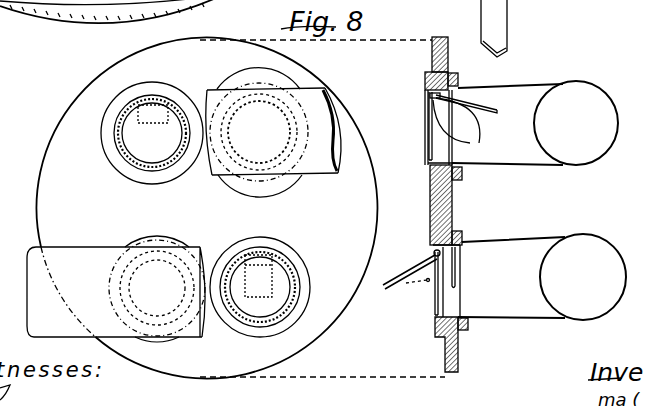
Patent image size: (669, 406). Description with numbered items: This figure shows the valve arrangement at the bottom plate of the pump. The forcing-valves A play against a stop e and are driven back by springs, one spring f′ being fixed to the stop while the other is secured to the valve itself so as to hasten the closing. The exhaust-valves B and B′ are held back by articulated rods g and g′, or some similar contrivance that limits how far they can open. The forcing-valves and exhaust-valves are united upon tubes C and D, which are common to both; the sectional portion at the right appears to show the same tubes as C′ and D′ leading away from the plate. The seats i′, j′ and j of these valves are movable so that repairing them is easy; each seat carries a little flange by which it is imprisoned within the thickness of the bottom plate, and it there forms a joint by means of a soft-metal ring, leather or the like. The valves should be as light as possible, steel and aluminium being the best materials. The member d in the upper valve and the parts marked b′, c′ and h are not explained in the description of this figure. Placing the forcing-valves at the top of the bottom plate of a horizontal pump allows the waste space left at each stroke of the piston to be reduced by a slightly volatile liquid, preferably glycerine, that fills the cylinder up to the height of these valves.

The forcing-valve A is at (152, 133).
The exhaust-valve B is at (157, 289).
The exhaust-valve B′ is at (260, 202).
The tube C is at (273, 131).
The tube D is at (116, 292).
The tube C′ is at (535, 123).
The tube D′ is at (542, 277).
The pipe stub b' b′ is at (548, 28).
The piece of leather c′ is at (383, 0).
The valve seat i′ is at (430, 92).
The clamping point d is at (424, 126).
The stop e is at (368, 18).
The spring f′ is at (478, 143).
The valve seat j′ is at (434, 245).
The articulated rod g is at (442, 284).
The articulated rod g′ is at (410, 277).
The part h is at (420, 306).
The valve seat j is at (417, 348).